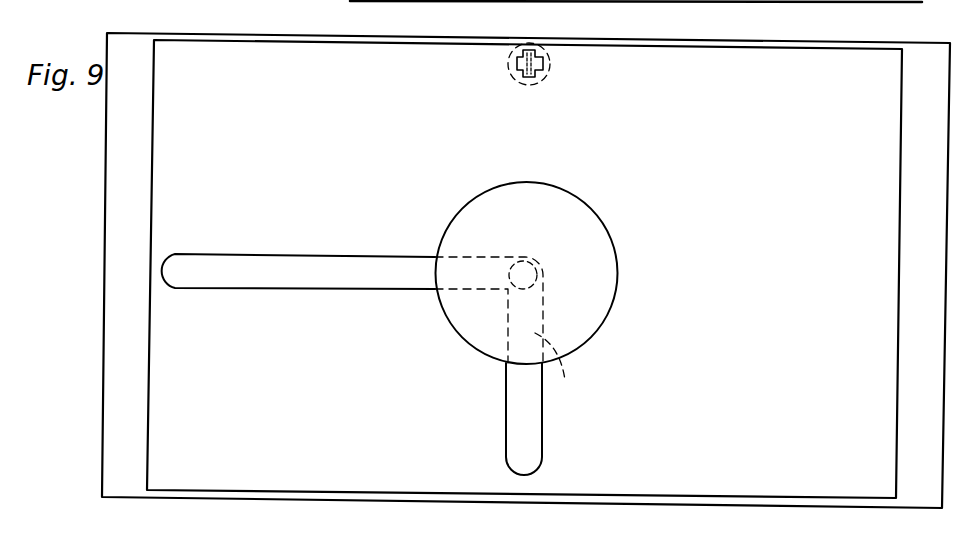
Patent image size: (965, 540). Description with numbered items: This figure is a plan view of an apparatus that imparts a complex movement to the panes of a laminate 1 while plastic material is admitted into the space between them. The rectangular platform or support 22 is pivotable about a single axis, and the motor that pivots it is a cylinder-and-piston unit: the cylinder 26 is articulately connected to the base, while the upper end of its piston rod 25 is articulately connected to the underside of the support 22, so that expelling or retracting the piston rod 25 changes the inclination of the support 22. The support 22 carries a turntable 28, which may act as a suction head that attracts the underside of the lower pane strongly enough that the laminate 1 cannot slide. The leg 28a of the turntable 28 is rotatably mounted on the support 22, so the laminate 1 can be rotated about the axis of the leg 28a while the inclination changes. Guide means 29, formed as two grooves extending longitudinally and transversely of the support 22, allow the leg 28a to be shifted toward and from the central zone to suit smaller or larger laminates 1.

The laminate 1 is at (846, 88).
The support 22 is at (124, 47).
The piston rod 25 is at (553, 63).
The cylinder 26 is at (528, 43).
The turntable 28 is at (565, 213).
The leg 28a is at (531, 291).
The guide means 29 is at (462, 275).